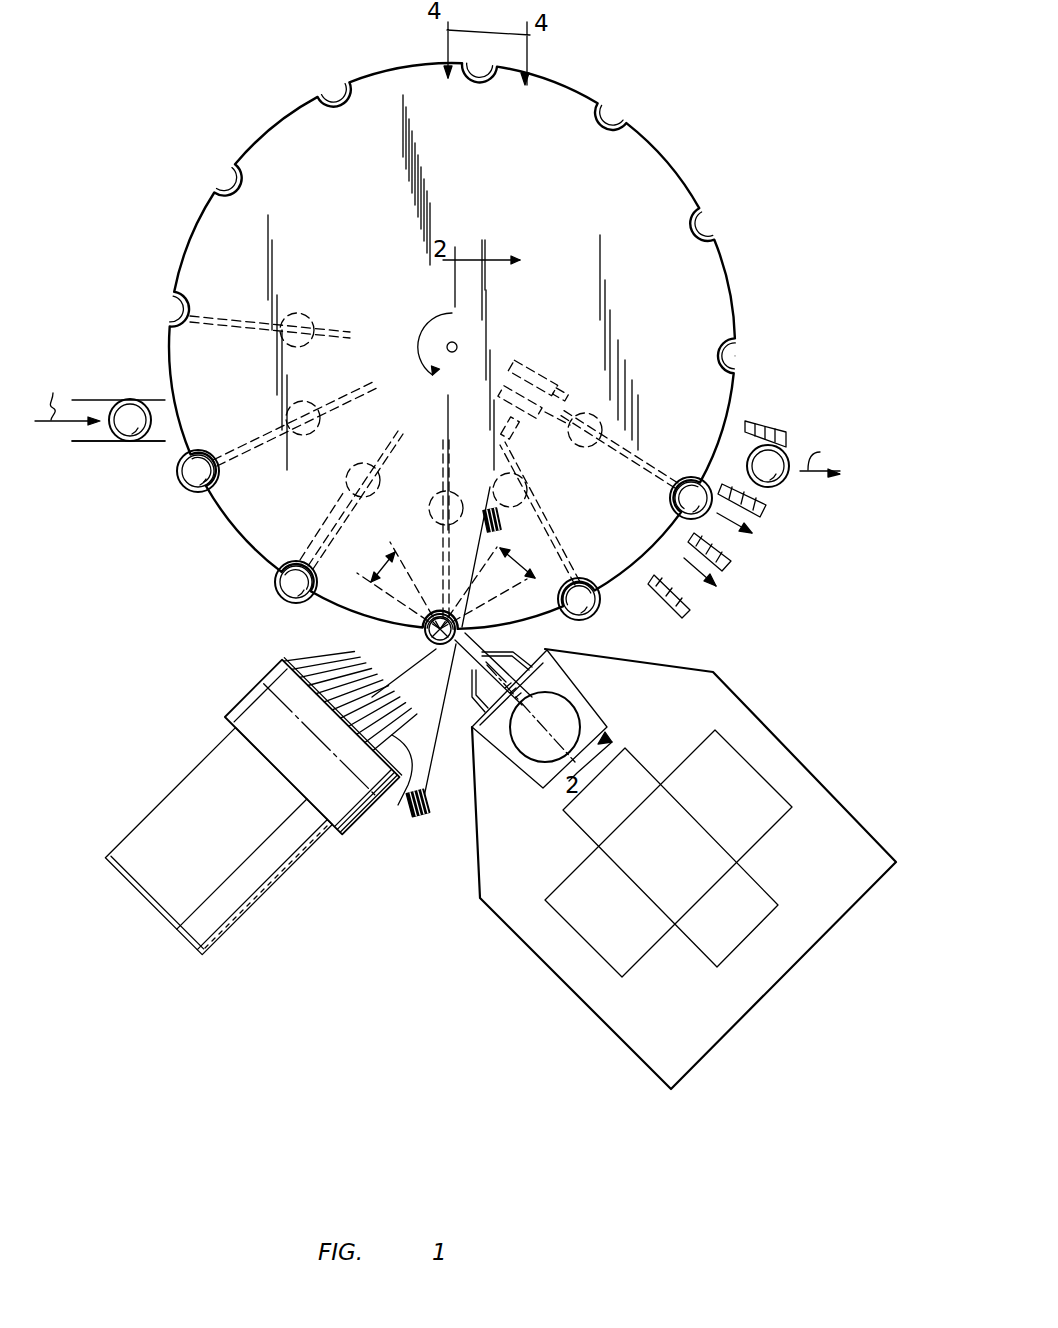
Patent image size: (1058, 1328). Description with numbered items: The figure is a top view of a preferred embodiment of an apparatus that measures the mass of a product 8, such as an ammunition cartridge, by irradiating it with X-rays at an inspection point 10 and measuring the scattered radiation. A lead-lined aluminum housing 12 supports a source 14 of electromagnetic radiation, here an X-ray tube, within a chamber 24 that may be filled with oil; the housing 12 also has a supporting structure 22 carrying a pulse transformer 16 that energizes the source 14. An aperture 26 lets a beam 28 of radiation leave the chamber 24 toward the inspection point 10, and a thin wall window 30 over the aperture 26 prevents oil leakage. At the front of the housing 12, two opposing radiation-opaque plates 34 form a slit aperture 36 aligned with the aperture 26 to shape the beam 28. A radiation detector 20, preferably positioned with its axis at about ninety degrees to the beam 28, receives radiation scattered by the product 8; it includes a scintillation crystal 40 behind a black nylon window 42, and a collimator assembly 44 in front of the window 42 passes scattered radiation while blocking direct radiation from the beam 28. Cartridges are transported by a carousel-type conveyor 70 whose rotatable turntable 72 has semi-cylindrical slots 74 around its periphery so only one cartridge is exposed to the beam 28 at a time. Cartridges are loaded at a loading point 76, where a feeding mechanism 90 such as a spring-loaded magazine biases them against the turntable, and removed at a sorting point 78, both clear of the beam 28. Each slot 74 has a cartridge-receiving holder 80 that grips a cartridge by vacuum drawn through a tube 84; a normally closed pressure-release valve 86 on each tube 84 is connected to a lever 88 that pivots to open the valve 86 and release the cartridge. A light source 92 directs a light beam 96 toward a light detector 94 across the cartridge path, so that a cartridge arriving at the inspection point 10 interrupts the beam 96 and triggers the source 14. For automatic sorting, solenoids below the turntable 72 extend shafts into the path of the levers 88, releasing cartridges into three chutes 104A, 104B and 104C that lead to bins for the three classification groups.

The product 8 is at (149, 424).
The inspection point 10 is at (425, 630).
The housing 12 is at (810, 772).
The source of electromagnetic radiation 14 is at (544, 749).
The pulse transformer 16 is at (752, 884).
The radiation detector 20 is at (258, 876).
The supporting structure 22 is at (776, 814).
The chamber 24 is at (610, 713).
The aperture 26 is at (560, 691).
The beam of radiation 28 is at (374, 580).
The thin wall window 30 is at (480, 745).
The opposing plates 34 is at (538, 647).
The slit aperture 36 is at (477, 650).
The sodium iodide scintillation crystal 40 is at (265, 685).
The window 42 is at (312, 688).
The collimator assembly 44 is at (374, 788).
The carousel-type conveyor 70 is at (737, 300).
The rotatable turntable 72 is at (492, 383).
The semi-cylindrical slots 74 is at (223, 175).
The loading point 76 is at (96, 406).
The sorting point 78 is at (811, 530).
The cartridge-receiving holder 80 is at (736, 355).
The tube 84 is at (335, 515).
The pressure-release valve 86 is at (355, 465).
The lever 88 is at (577, 447).
The feeding mechanism 90 is at (92, 443).
The light source 92 is at (425, 812).
The light detector 94 is at (490, 487).
The light beam 96 is at (426, 785).
The chute 104A is at (760, 531).
The chute 104B is at (718, 572).
The chute 104C is at (789, 445).